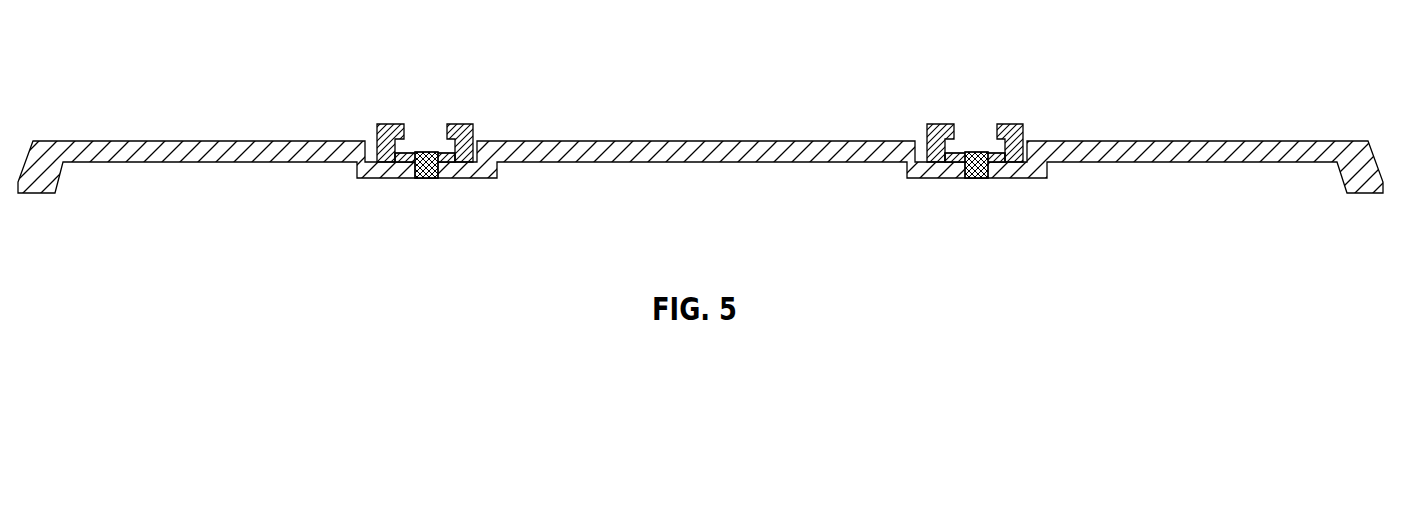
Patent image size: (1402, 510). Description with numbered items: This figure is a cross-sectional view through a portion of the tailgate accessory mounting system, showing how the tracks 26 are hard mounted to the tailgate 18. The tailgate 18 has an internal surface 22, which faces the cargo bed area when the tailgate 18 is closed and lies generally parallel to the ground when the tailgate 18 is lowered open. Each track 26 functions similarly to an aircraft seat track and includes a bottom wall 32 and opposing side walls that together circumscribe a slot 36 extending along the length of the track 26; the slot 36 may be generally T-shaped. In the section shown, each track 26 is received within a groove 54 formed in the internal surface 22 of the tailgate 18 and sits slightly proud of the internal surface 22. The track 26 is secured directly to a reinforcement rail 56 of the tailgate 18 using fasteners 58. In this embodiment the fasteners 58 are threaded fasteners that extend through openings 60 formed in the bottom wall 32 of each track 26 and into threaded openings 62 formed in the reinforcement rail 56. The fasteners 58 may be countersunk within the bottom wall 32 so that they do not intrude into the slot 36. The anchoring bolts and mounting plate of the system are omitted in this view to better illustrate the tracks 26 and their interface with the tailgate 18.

The tailgate 18 is at (1270, 141).
The internal surface 22 is at (1182, 141).
The track 26 is at (463, 124).
The bottom wall 32 is at (387, 178).
The slot 36 is at (426, 148).
The groove 54 is at (373, 148).
The reinforcement rail 56 is at (360, 180).
The fastener 58 is at (423, 148).
The opening 60 is at (474, 139).
The threaded opening 62 is at (441, 164).